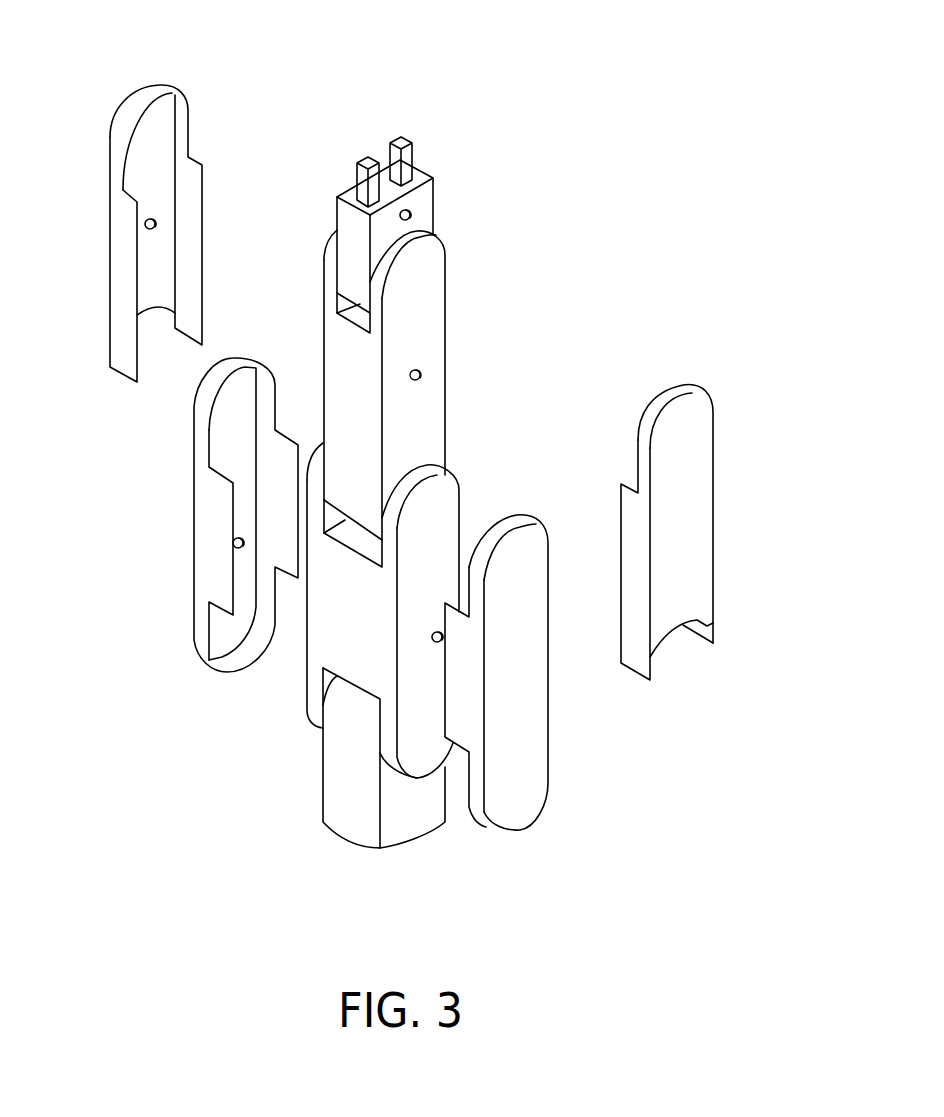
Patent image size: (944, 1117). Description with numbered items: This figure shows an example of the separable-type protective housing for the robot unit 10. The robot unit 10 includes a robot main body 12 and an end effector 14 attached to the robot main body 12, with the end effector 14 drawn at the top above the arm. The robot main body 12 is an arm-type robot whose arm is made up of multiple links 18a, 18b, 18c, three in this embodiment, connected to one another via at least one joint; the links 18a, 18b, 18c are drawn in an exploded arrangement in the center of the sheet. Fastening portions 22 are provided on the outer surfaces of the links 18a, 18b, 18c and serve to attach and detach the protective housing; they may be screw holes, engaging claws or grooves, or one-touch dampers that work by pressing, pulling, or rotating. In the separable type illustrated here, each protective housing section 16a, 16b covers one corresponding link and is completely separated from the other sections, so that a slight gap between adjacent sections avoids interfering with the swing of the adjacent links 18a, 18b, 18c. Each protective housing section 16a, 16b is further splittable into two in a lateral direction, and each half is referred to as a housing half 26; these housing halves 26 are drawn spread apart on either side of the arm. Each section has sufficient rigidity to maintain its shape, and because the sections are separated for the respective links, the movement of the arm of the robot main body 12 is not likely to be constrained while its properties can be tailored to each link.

The robot unit 10 is at (468, 110).
The robot main body 12 is at (290, 748).
The end effector 14 is at (423, 195).
The protective housing section 16a is at (143, 95).
The protective housing section 16b is at (197, 542).
The link 18a is at (433, 298).
The link 18b is at (323, 648).
The link 18c is at (330, 795).
The fastening portion 22 is at (421, 374).
The housing half 26 is at (448, 422).